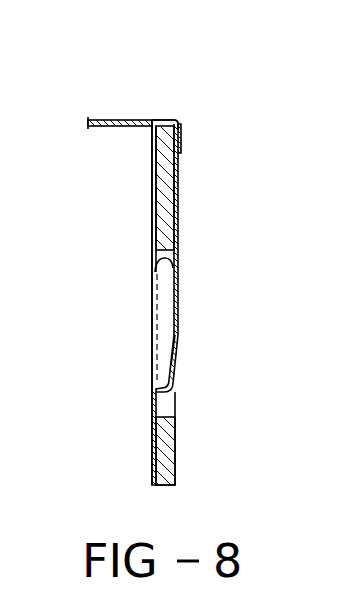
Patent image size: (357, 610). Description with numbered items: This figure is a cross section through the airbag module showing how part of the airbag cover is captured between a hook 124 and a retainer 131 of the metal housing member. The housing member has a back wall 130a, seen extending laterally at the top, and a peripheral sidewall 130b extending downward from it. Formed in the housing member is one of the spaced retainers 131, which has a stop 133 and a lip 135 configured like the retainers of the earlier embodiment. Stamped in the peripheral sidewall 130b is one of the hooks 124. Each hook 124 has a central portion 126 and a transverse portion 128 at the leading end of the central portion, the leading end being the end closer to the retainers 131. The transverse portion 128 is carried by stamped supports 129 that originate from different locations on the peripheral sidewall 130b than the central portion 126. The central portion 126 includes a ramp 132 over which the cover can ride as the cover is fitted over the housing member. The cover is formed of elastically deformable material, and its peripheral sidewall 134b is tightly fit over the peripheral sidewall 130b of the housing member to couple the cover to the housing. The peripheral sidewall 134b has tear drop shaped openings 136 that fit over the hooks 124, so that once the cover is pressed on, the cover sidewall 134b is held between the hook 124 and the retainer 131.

The hook 124 is at (187, 273).
The central portion 126 is at (178, 308).
The transverse portion 128 is at (178, 222).
The stamped support 129 is at (152, 255).
The back wall 130a is at (123, 120).
The peripheral sidewall 130b is at (153, 178).
The retainer 131 is at (185, 118).
The ramp 132 is at (176, 347).
The stop 133 is at (167, 119).
The peripheral sidewall 134b is at (153, 155).
The lip 135 is at (181, 142).
The tear drop shaped opening 136 is at (176, 409).